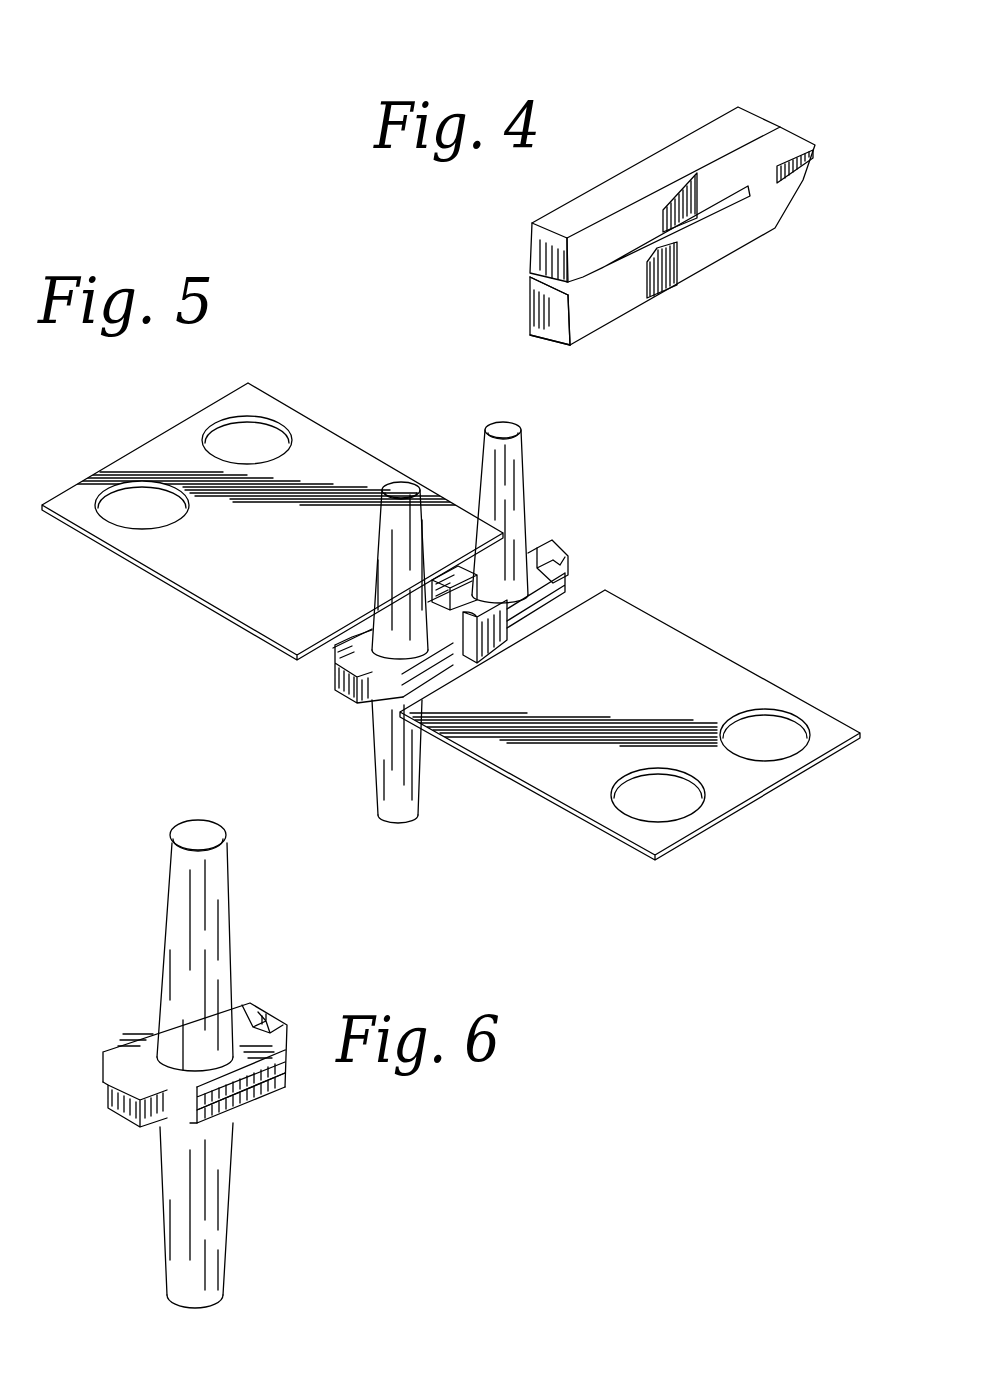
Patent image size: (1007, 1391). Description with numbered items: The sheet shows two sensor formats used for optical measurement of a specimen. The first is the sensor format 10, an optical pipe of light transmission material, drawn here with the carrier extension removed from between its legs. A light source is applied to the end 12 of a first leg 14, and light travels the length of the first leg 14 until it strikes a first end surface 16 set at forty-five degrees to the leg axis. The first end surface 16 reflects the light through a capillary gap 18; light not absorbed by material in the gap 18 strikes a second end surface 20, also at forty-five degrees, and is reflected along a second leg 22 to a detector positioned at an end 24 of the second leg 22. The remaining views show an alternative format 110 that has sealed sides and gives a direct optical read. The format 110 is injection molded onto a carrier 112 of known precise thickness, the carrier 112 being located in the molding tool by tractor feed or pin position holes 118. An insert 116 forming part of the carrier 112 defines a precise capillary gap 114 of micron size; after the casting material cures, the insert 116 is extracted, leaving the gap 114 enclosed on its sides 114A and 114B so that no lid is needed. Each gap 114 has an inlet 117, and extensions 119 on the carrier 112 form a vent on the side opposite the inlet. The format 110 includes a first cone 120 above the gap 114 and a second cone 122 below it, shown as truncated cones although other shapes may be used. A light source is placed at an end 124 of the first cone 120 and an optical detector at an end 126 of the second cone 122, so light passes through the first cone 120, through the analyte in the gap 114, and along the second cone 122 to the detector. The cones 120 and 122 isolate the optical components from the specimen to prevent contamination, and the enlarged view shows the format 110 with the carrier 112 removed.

In FIG. 4, the sensor format 10 is at (648, 124).
In FIG. 4, the end of first leg 12 is at (532, 243).
In FIG. 4, the first leg 14 is at (572, 208).
In FIG. 4, the first end surface 16 is at (777, 122).
In FIG. 4, the capillary gap 18 is at (814, 147).
In FIG. 4, the second end surface 20 is at (765, 212).
In FIG. 4, the second leg 22 is at (672, 265).
In FIG. 4, the end of second leg 24 is at (553, 338).
In FIG. 5, the format 110 is at (476, 404).
In FIG. 6, the format 110 is at (276, 938).
In FIG. 5, the carrier 112 is at (630, 624).
In FIG. 6, the capillary gap 114 is at (266, 1087).
In FIG. 5, the side of gap 114A is at (341, 684).
In FIG. 6, the side of gap 114A is at (110, 1110).
In FIG. 5, the side of gap 114B is at (563, 556).
In FIG. 6, the side of gap 114B is at (270, 1022).
In FIG. 5, the insert 116 is at (565, 608).
In FIG. 6, the inlet 117 is at (237, 1122).
In FIG. 5, the position holes 118 is at (130, 482).
In FIG. 5, the extensions 119 is at (458, 566).
In FIG. 5, the first cone 120 is at (378, 553).
In FIG. 6, the first cone 120 is at (170, 936).
In FIG. 5, the second cone 122 is at (403, 782).
In FIG. 6, the second cone 122 is at (178, 1168).
In FIG. 5, the end of first cone 124 is at (401, 482).
In FIG. 6, the end of first cone 124 is at (190, 832).
In FIG. 5, the end of second cone 126 is at (394, 822).
In FIG. 6, the end of second cone 126 is at (202, 1310).